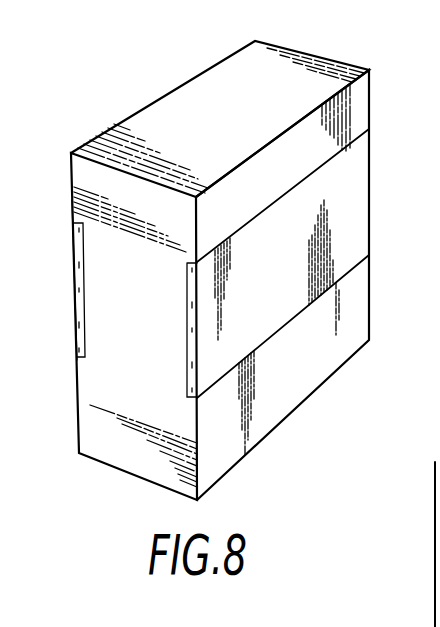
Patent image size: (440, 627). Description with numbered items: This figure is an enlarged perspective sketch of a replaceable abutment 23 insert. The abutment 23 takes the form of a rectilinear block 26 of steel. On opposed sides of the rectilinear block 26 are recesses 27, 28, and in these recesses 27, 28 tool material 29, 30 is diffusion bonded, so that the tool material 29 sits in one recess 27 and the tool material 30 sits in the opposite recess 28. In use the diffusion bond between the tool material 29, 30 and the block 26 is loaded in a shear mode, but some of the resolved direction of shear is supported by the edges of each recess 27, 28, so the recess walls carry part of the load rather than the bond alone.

The abutment 23 is at (210, 68).
The rectilinear block 26 is at (322, 63).
The recess 27 is at (86, 327).
The recess 28 is at (188, 367).
The tool material 29 is at (75, 343).
The tool material 30 is at (353, 237).